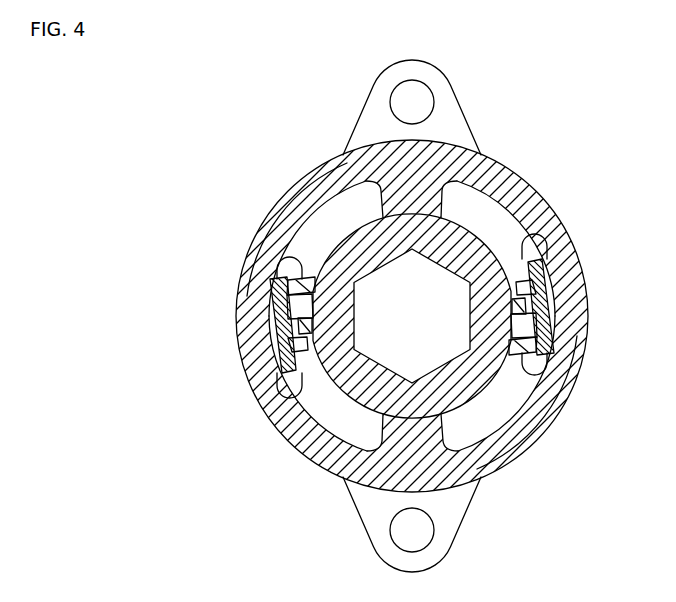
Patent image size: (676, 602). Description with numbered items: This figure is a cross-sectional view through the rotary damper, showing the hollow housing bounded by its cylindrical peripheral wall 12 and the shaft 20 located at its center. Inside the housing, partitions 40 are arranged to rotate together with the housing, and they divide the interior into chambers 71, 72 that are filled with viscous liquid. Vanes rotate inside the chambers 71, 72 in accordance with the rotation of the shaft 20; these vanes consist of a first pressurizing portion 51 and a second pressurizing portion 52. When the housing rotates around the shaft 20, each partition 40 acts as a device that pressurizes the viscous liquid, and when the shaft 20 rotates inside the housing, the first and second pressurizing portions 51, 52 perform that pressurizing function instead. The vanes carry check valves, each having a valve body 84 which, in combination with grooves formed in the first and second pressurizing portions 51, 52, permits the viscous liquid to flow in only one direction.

The cylindrical peripheral wall 12 is at (532, 205).
The shaft 20 is at (353, 232).
The partition 40 is at (470, 163).
The first pressurizing portion 51 is at (290, 390).
The second pressurizing portion 52 is at (286, 268).
The chamber 71 is at (318, 232).
The chamber 72 is at (485, 205).
The valve body 84 is at (271, 320).